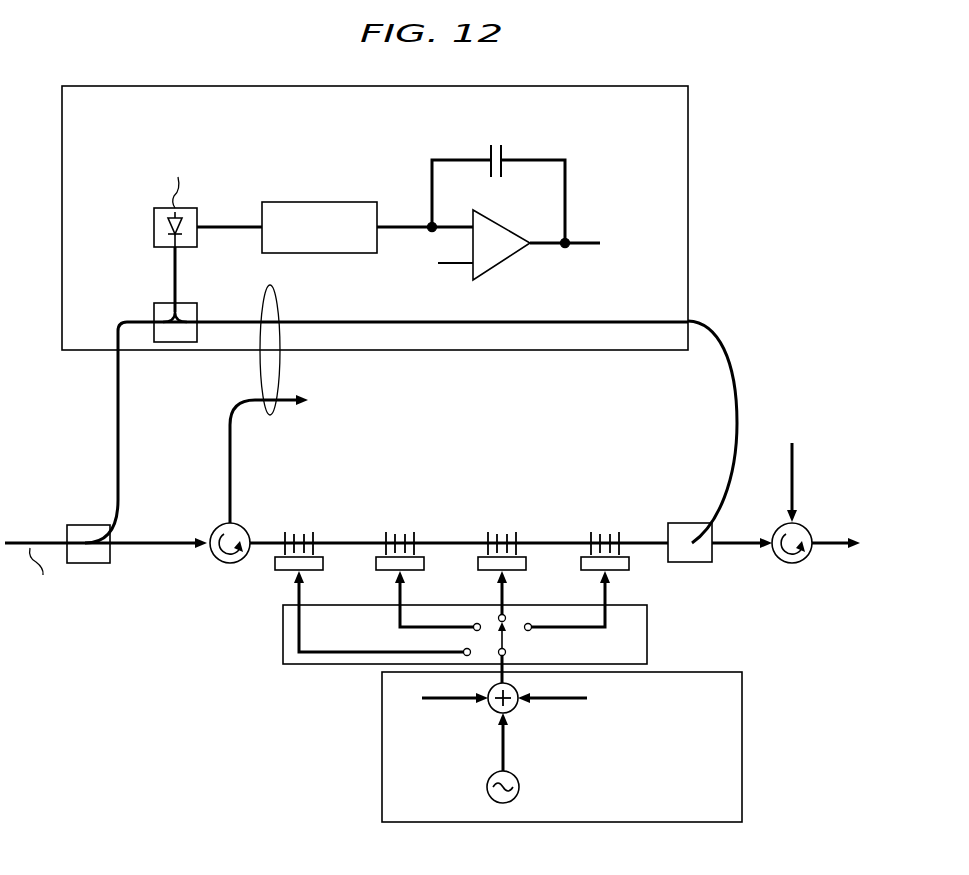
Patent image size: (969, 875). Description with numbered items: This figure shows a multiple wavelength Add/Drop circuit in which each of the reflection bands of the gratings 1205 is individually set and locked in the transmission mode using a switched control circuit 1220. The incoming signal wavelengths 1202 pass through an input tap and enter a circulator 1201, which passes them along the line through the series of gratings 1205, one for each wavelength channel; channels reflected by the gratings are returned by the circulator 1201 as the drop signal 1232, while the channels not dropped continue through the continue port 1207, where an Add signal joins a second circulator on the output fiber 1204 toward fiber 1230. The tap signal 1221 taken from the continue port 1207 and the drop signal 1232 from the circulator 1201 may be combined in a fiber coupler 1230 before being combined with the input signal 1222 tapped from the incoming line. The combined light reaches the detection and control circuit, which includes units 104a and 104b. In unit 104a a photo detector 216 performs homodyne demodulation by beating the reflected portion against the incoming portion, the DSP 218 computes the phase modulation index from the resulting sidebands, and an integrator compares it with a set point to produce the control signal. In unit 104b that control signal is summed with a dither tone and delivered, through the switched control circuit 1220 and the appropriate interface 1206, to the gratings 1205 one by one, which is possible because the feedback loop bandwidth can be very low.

The detection and control circuit unit 104a is at (688, 208).
The detection and control circuit unit 104b is at (742, 745).
The photo detector 216 is at (154, 228).
The DSP 218 is at (313, 202).
The circulator 1201 is at (215, 530).
The incoming signal wavelengths 1202 is at (43, 540).
The output fiber 1204 is at (745, 548).
The gratings 1205 is at (627, 483).
The interface 1206 is at (273, 566).
The continue port 1207 is at (712, 535).
The switched control circuit 1220 is at (647, 640).
The tap signal 1221 is at (735, 430).
The input signal 1222 is at (118, 420).
The fiber coupler 1230 is at (260, 378).
The drop signal 1232 is at (230, 447).